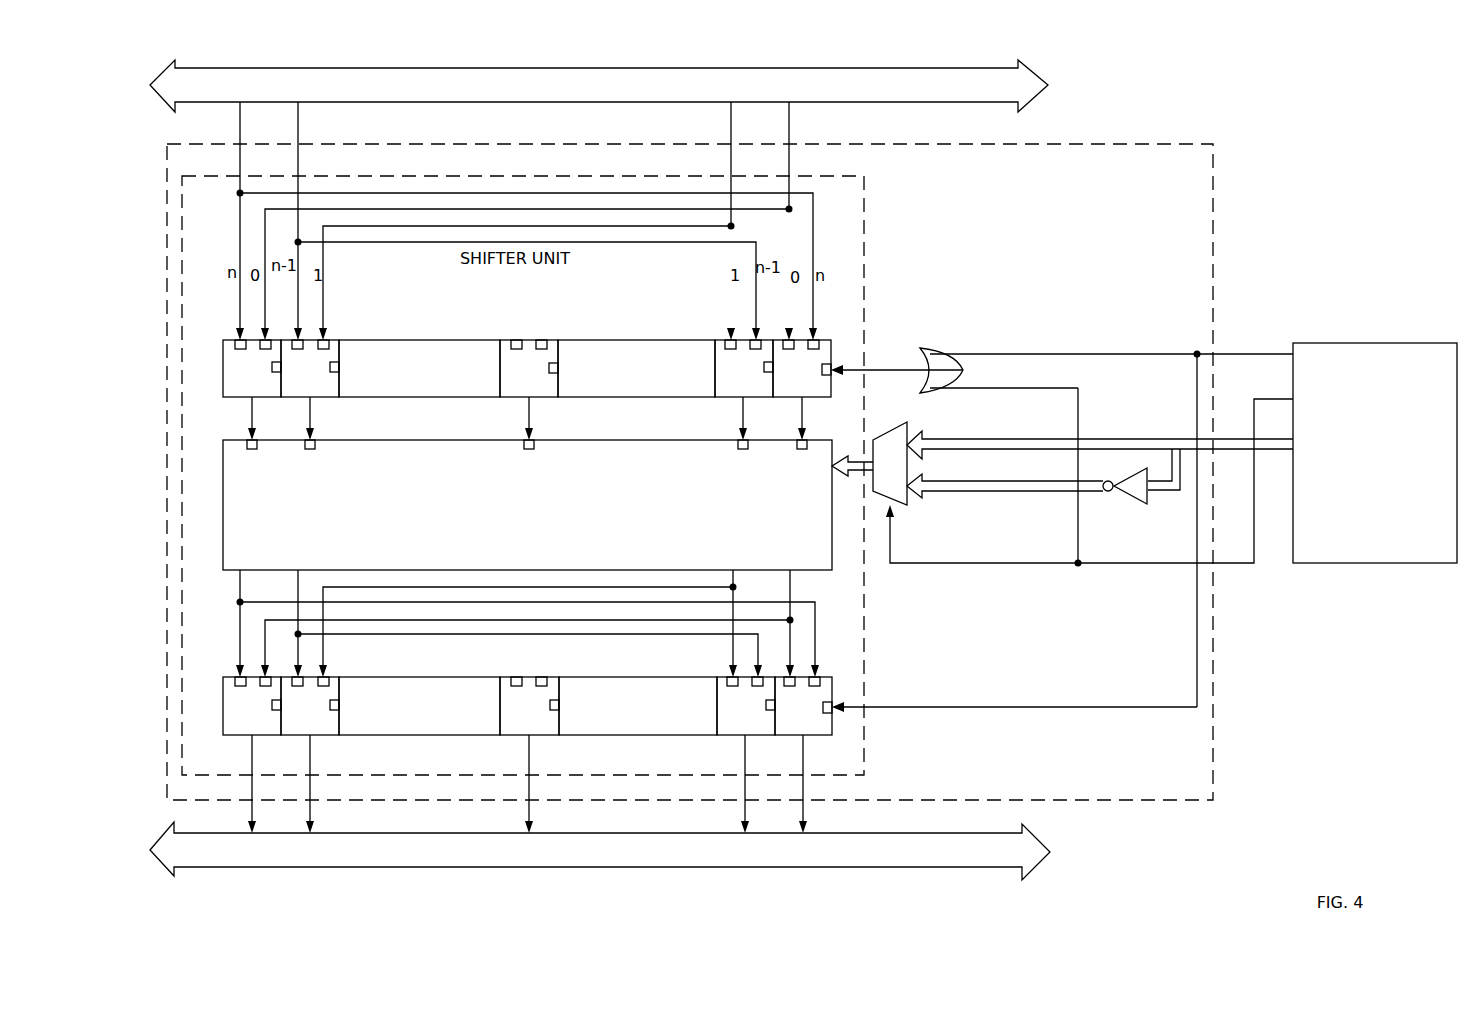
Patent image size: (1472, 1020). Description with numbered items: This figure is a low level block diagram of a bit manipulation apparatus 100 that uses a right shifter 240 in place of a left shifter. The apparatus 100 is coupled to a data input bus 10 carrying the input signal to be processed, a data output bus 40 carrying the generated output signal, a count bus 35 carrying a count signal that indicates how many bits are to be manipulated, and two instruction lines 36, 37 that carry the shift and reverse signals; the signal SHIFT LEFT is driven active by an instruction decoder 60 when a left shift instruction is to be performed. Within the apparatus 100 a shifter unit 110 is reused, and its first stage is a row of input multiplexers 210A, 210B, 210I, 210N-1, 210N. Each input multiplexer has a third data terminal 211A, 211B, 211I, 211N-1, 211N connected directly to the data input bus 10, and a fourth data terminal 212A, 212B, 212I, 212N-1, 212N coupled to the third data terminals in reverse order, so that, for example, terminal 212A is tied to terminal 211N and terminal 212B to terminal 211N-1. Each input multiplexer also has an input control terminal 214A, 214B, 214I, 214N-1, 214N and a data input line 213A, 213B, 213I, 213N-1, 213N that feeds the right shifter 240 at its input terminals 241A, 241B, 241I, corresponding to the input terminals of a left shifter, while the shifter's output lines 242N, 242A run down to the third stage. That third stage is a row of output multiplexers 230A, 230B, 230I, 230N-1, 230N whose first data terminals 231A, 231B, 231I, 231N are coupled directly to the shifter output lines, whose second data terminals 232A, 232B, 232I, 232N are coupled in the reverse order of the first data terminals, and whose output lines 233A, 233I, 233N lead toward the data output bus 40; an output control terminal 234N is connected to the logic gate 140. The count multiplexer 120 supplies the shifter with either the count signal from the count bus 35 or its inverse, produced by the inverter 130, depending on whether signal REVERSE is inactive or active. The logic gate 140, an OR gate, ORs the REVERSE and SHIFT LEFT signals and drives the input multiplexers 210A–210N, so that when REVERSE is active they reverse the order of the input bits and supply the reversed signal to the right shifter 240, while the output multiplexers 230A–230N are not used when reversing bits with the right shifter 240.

The data input bus 10 is at (913, 97).
The data output bus 40 is at (937, 862).
The bit manipulation apparatus 100 is at (1213, 175).
The shifter unit 110 is at (863, 202).
The count multiplexer 120 is at (888, 430).
The inverter 130 is at (1133, 490).
The logic gate 140 is at (948, 348).
The count bus 35 is at (1232, 439).
The instruction line 36 is at (1258, 352).
The instruction line 37 is at (1270, 402).
The instruction decoder 60 is at (1364, 496).
The right shifter 240 is at (447, 438).
The input multiplexer 210N is at (223, 387).
The input multiplexer 210N-1 is at (330, 385).
The input multiplexer 210I is at (508, 377).
The input multiplexer 210B is at (744, 368).
The input multiplexer 210A is at (822, 397).
The third data terminal 211N is at (230, 346).
The third data terminal 211N-1 is at (300, 338).
The third data terminal 211I is at (514, 340).
The third data terminal 211B is at (718, 352).
The third data terminal 211A is at (785, 349).
The fourth data terminal 212N is at (262, 338).
The fourth data terminal 212N-1 is at (326, 338).
The fourth data terminal 212I is at (543, 340).
The fourth data terminal 212B is at (752, 340).
The fourth data terminal 212A is at (812, 340).
The data input line 213N is at (255, 405).
The data input line 213N-1 is at (313, 405).
The data input line 213I is at (532, 412).
The data input line 213B is at (742, 410).
The data input line 213A is at (800, 405).
The input control terminal 214N is at (270, 372).
The input control terminal 214N-1 is at (340, 362).
The input control terminal 214I is at (560, 368).
The input control terminal 214B is at (764, 366).
The input control terminal 214A is at (834, 366).
The right shifter input A 241A is at (800, 463).
The right shifter input B 241B is at (740, 463).
The right shifter input I 241I is at (530, 449).
The right shifter output N 242N is at (240, 578).
The right shifter output A 242A is at (815, 592).
The output multiplexer 230N is at (243, 735).
The output multiplexer 230N-1 is at (318, 723).
The output multiplexer 230I is at (508, 722).
The output multiplexer 230B is at (718, 700).
The output multiplexer 230A is at (820, 735).
The first data terminal 231N is at (228, 682).
The first data terminal 231I is at (514, 677).
The first data terminal 231B is at (728, 676).
The first data terminal 231A is at (788, 686).
The second data terminal 232N is at (262, 675).
The second data terminal 232I is at (543, 677).
The second data terminal 232B is at (758, 686).
The second data terminal 232A is at (817, 676).
The output of lower cell N 233N is at (255, 748).
The output of lower cell I 233I is at (532, 752).
The output of lower cell A 233A is at (803, 744).
The output control terminal 234N is at (270, 708).